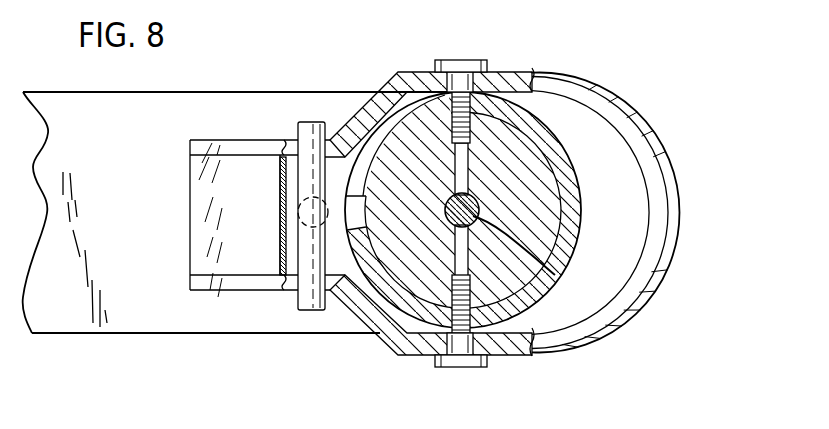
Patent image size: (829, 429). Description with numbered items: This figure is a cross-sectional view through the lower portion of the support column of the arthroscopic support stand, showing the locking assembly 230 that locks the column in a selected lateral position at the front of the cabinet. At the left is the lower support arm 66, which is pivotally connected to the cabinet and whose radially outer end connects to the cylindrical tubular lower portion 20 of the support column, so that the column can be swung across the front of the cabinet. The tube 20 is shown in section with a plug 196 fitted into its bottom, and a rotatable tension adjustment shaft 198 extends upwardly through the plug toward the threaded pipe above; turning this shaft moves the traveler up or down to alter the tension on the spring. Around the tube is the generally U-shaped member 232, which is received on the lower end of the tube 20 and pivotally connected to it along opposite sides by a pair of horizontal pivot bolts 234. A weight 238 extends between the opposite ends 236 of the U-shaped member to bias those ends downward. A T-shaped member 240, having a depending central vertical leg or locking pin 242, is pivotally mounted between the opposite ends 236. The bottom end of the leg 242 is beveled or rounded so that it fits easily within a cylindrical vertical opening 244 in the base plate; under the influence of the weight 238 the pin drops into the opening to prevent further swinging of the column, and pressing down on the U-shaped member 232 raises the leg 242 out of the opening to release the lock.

The lower support arm 66 is at (112, 171).
The cylindrical tubular lower portion 20 is at (578, 250).
The plug 196 is at (577, 176).
The tension adjustment shaft 198 is at (550, 278).
The locking assembly 230 is at (618, 80).
The U-shaped member 232 is at (641, 300).
The horizontal pivot bolts 234 is at (462, 60).
The opposite ends 236 is at (220, 140).
The weight 238 is at (190, 222).
The T-shaped member 240 is at (312, 122).
The locking pin 242 is at (298, 230).
The cylindrical vertical opening 244 is at (298, 210).